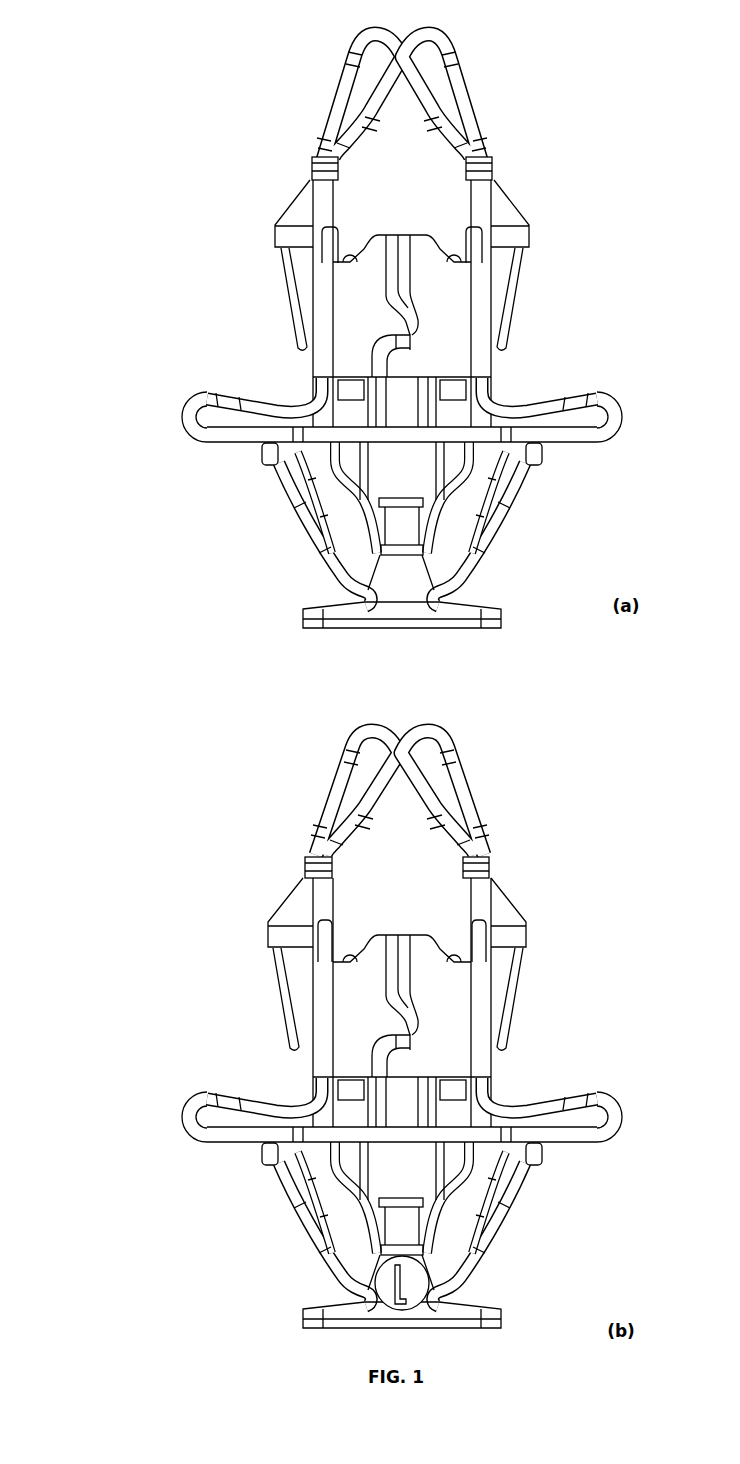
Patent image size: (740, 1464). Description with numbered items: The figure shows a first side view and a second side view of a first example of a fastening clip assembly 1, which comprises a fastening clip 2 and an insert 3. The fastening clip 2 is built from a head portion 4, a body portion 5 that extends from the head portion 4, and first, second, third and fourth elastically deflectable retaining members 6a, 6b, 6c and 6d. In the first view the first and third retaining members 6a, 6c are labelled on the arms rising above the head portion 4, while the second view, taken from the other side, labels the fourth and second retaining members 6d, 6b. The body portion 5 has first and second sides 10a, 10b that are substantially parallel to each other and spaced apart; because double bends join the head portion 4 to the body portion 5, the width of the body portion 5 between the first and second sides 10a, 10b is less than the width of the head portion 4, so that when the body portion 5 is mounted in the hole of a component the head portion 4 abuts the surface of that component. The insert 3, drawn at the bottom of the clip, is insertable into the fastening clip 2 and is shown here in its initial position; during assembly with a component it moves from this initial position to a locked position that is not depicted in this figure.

The fastening clip assembly 1 is at (251, 78).
The fastening clip 2 is at (335, 298).
The insert 3 is at (403, 603).
The head portion 4 is at (243, 443).
The body portion 5 is at (360, 337).
The first elastically deflectable retaining member 6a is at (312, 157).
The second elastically deflectable retaining member 6b is at (480, 818).
The third elastically deflectable retaining member 6c is at (478, 118).
The fourth elastically deflectable retaining member 6d is at (312, 857).
The first side of the body portion 10a is at (292, 327).
The second side of the body portion 10b is at (510, 312).